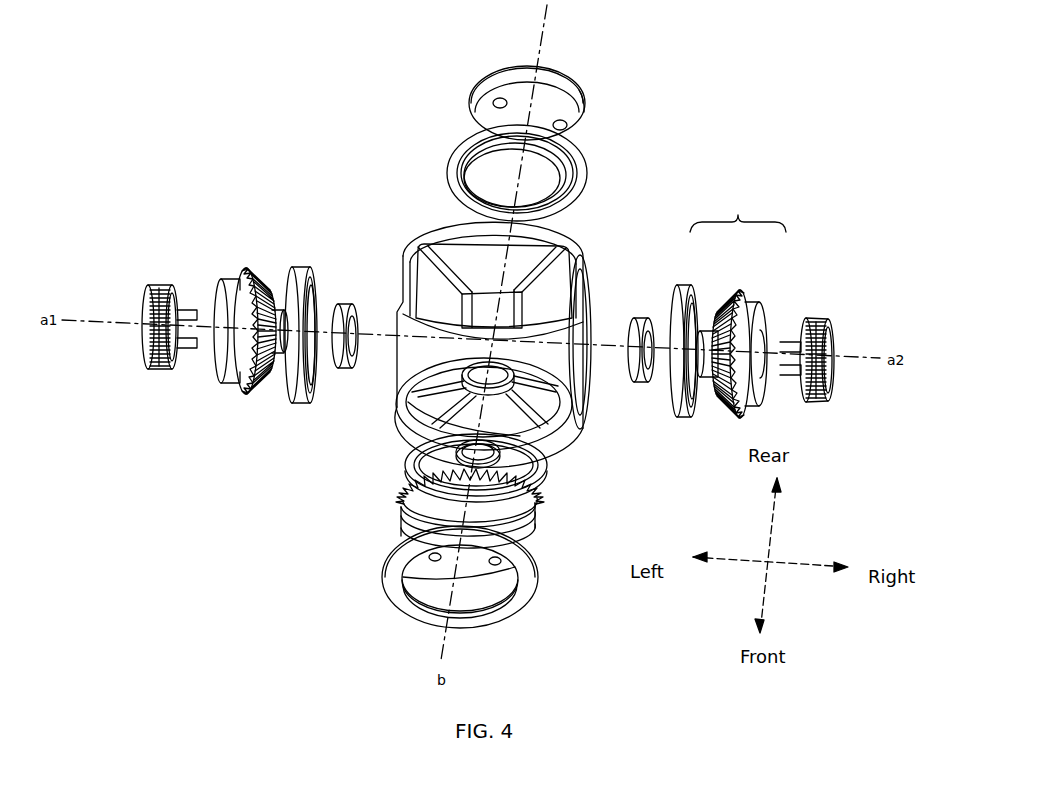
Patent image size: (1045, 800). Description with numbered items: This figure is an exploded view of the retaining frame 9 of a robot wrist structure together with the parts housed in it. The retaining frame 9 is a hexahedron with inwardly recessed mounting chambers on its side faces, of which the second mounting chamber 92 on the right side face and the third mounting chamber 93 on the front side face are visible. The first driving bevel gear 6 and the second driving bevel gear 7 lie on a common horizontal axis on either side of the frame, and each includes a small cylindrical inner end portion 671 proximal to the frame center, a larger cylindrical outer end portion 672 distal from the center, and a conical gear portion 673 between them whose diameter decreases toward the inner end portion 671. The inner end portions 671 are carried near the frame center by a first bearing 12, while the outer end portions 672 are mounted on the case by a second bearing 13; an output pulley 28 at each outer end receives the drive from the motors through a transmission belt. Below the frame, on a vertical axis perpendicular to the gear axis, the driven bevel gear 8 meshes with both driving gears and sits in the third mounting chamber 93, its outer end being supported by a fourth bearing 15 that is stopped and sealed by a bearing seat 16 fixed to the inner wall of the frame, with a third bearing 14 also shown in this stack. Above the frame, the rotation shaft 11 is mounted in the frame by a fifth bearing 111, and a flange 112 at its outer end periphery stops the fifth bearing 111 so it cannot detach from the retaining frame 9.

The rotation shaft 11 is at (522, 94).
The flange 112 is at (584, 106).
The fifth bearing 111 is at (462, 149).
The retaining frame 9 is at (412, 362).
The second mounting chamber 92 is at (582, 352).
The third mounting chamber 93 is at (500, 402).
The fourth bearing 15 is at (418, 462).
The third bearing 14 is at (534, 488).
The driven bevel gear 8 is at (412, 496).
The bearing seat 16 is at (397, 573).
The output pulley 28 is at (162, 372).
The first driving bevel gear 6 is at (236, 300).
The second bearing 13 is at (300, 270).
The first bearing 12 is at (338, 362).
The second driving bevel gear 7 is at (739, 307).
The inner end portion 671 is at (710, 340).
The gear portion 673 is at (740, 292).
The outer end portion 672 is at (754, 340).